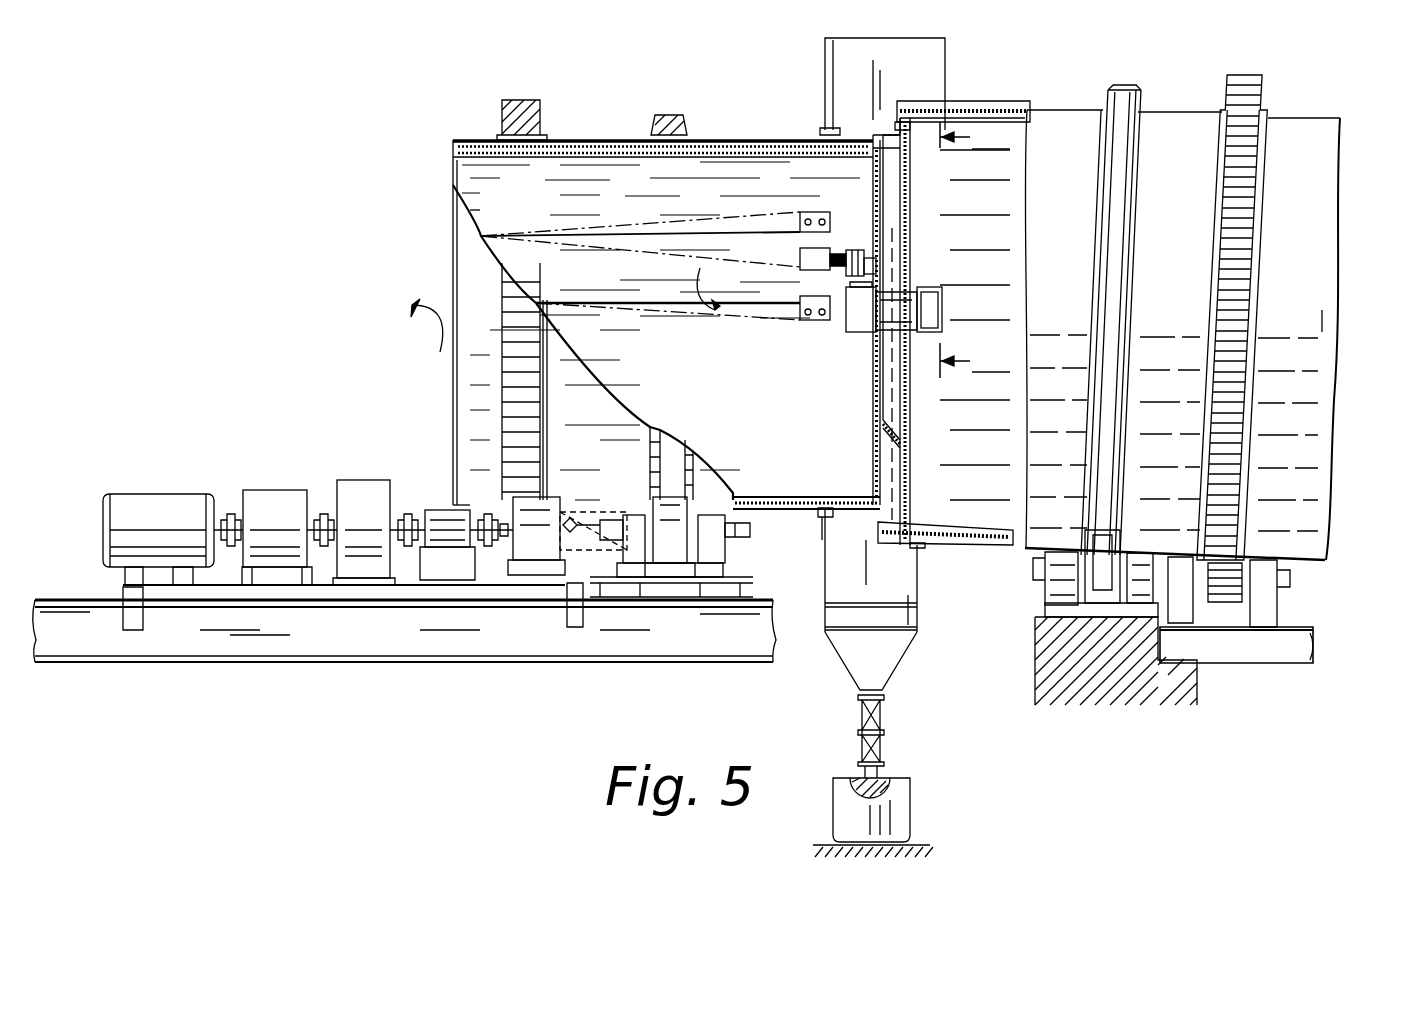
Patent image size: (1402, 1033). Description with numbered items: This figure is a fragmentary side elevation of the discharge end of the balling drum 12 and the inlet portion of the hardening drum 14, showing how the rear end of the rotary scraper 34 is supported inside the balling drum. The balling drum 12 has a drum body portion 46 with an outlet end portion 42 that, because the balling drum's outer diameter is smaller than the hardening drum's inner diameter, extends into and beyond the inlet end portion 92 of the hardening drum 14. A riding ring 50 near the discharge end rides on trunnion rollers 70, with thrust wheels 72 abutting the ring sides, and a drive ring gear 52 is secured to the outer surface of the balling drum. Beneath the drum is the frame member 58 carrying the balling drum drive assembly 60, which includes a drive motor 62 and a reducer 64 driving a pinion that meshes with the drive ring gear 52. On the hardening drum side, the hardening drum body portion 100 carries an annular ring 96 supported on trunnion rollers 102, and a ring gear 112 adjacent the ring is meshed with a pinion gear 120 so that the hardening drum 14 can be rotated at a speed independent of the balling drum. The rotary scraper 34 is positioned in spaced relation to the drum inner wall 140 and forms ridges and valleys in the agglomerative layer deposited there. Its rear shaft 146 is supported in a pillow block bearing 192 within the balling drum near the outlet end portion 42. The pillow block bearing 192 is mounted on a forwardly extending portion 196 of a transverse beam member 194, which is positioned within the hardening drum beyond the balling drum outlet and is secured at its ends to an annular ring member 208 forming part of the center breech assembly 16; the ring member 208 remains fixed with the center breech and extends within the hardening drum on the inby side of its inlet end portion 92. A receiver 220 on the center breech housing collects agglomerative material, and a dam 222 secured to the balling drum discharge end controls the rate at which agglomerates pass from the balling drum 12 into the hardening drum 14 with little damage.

The balling drum 12 is at (603, 128).
The hardening drum 14 is at (1080, 100).
The center breech assembly 16 is at (948, 58).
The rotary scraper 34 is at (680, 210).
The outlet end portion 42 is at (885, 140).
The drum body portion 46 is at (463, 410).
The riding ring 50 is at (663, 463).
The drive ring gear 52 is at (530, 412).
The frame member 58 is at (352, 648).
The balling drum drive assembly 60 is at (432, 493).
The drive motor 62 is at (183, 498).
The reducer 64 is at (352, 483).
The trunnion rollers 70 is at (683, 520).
The thrust wheels 72 is at (610, 523).
The inlet end portion 92 is at (885, 386).
The annular ring 96 is at (1110, 341).
The hardening drum body portion 100 is at (1322, 321).
The trunnion rollers 102 is at (1110, 548).
The ring gear 112 is at (1240, 370).
The pinion gear 120 is at (1235, 568).
The drum inner wall 140 is at (532, 215).
The rear shaft 146 is at (848, 254).
The pillow block bearing 192 is at (866, 256).
The transverse beam member 194 is at (940, 300).
The forwardly extending portion 196 is at (858, 325).
The annular ring member 208 is at (912, 132).
The receiver 220 is at (895, 650).
The dam 222 is at (900, 425).